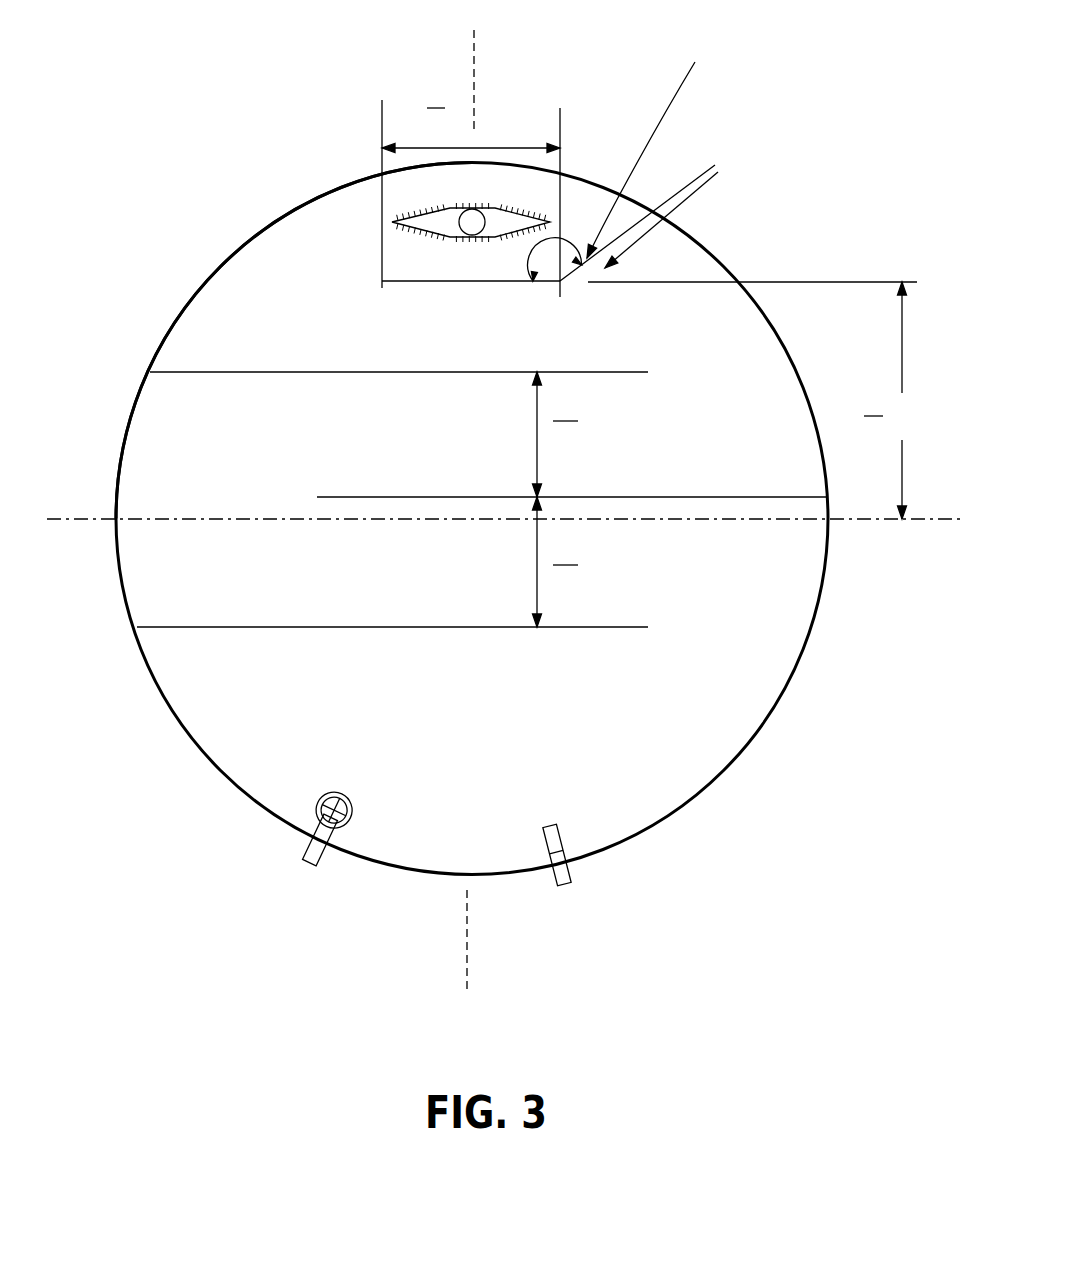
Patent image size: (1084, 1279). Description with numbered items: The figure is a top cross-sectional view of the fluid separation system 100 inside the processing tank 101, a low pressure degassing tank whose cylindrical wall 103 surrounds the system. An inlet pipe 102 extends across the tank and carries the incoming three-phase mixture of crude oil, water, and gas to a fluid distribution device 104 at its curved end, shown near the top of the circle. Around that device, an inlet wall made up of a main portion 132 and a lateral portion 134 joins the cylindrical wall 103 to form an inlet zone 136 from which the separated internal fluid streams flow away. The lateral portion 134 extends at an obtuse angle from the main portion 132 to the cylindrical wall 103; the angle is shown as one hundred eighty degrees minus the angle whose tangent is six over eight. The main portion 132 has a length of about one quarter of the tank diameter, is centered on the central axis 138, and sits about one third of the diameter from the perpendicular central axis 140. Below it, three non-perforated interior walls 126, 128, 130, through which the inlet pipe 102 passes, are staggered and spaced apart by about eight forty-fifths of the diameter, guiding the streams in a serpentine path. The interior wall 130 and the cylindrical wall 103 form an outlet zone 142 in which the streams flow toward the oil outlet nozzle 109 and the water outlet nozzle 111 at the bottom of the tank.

The fluid separation system 100 is at (318, 235).
The processing tank 101 is at (530, 519).
The cylindrical wall 103 is at (808, 662).
The inlet pipe 102 is at (471, 223).
The fluid distribution device 104 is at (523, 193).
The oil outlet nozzle 109 is at (310, 860).
The water outlet nozzle 111 is at (572, 880).
The interior wall 126 is at (337, 373).
The interior wall 128 is at (652, 497).
The interior wall 130 is at (360, 628).
The main portion 132 is at (437, 282).
The lateral portion 134 is at (642, 220).
The inlet zone 136 is at (412, 188).
The central axis 138 is at (467, 968).
The central axis 140 is at (83, 521).
The outlet zone 142 is at (547, 718).